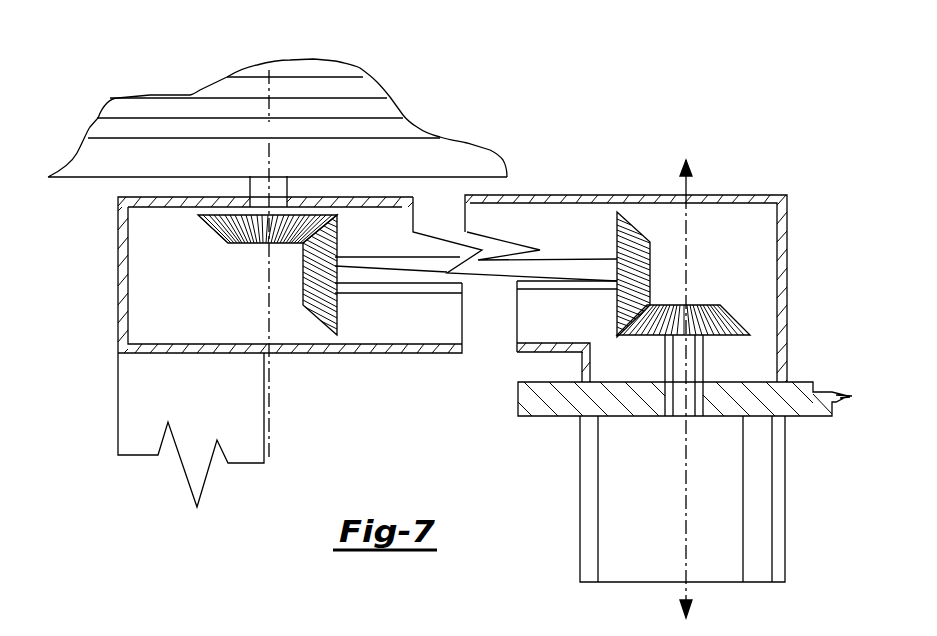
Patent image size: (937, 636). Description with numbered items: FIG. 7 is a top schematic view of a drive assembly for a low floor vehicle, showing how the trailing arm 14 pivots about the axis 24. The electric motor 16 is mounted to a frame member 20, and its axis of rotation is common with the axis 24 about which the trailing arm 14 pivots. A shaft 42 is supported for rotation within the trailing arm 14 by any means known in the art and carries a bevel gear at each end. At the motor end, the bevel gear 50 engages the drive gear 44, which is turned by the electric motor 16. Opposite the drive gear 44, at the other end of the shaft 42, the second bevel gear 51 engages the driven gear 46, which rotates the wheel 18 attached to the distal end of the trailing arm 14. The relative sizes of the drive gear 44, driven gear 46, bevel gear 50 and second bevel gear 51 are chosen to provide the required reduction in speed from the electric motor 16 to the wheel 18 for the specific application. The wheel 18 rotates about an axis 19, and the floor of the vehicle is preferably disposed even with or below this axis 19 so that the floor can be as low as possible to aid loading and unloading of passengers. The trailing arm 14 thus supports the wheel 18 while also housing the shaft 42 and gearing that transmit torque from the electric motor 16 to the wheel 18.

The trailing arm 14 is at (558, 200).
The electric motor 16 is at (623, 451).
The wheel 18 is at (207, 108).
The axis 19 is at (269, 0).
The frame member 20 is at (558, 399).
The axis 24 is at (682, 478).
The shaft 42 is at (565, 269).
The drive gear 44 is at (737, 312).
The driven gear 46 is at (232, 244).
The bevel gear 50 is at (645, 246).
The second bevel gear 51 is at (339, 309).